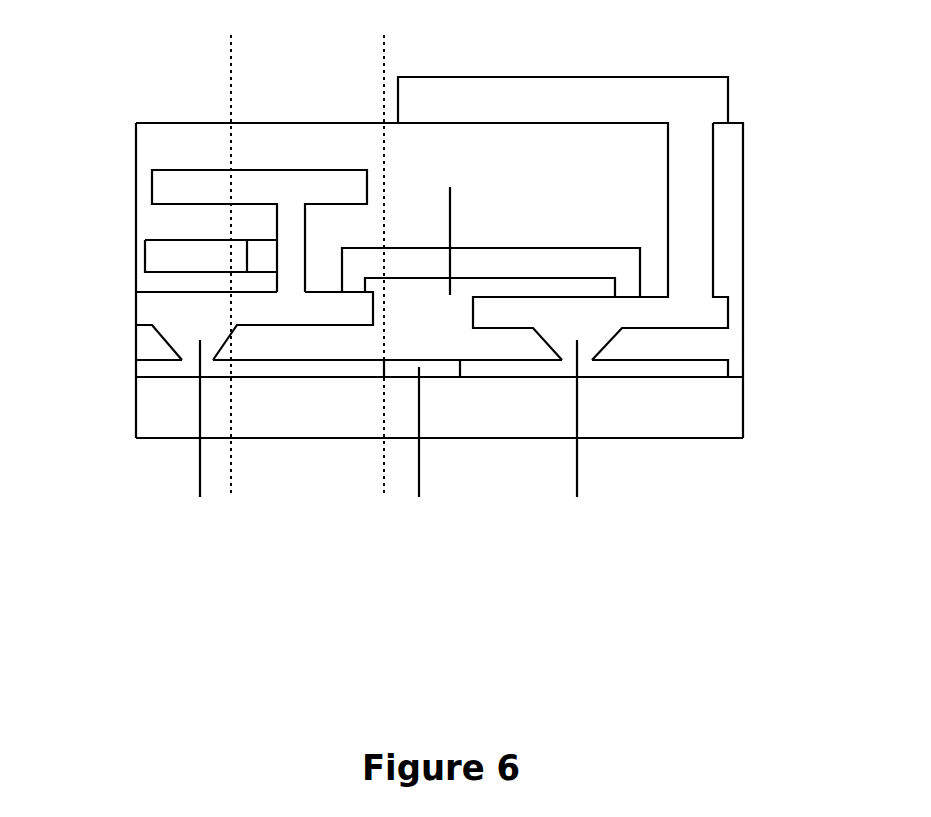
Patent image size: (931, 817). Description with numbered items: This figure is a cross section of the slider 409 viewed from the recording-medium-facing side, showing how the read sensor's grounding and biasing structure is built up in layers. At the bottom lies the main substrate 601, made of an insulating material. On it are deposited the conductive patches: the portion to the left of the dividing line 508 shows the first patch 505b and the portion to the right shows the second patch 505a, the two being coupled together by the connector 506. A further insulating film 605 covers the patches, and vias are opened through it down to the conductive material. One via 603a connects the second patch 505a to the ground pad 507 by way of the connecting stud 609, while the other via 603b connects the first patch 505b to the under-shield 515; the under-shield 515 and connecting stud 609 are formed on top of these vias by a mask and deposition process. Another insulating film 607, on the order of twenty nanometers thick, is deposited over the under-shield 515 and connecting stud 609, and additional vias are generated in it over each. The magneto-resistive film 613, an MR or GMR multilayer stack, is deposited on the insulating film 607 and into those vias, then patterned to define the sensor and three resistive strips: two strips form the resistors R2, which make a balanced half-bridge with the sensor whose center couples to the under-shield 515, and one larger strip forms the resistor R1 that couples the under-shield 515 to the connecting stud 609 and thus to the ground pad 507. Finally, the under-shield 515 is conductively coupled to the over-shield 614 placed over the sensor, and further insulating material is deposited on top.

The slider 409 is at (231, 75).
The ground pad 507 is at (687, 100).
The over-shield 614 is at (168, 190).
The insulating film 607 is at (258, 281).
The magneto-resistive film 613 is at (168, 257).
The under-shield 515 is at (168, 309).
The first patch 505b is at (136, 368).
The insulating film 605 is at (422, 352).
The connecting stud 609 is at (687, 310).
The second patch 505a is at (728, 368).
The main substrate 601 is at (743, 418).
The dividing line 508 is at (384, 466).
The via 603b is at (205, 431).
The connector 506 is at (421, 445).
The via 603a is at (581, 431).
The resistor R1 is at (615, 221).
The resistor R2 is at (263, 255).